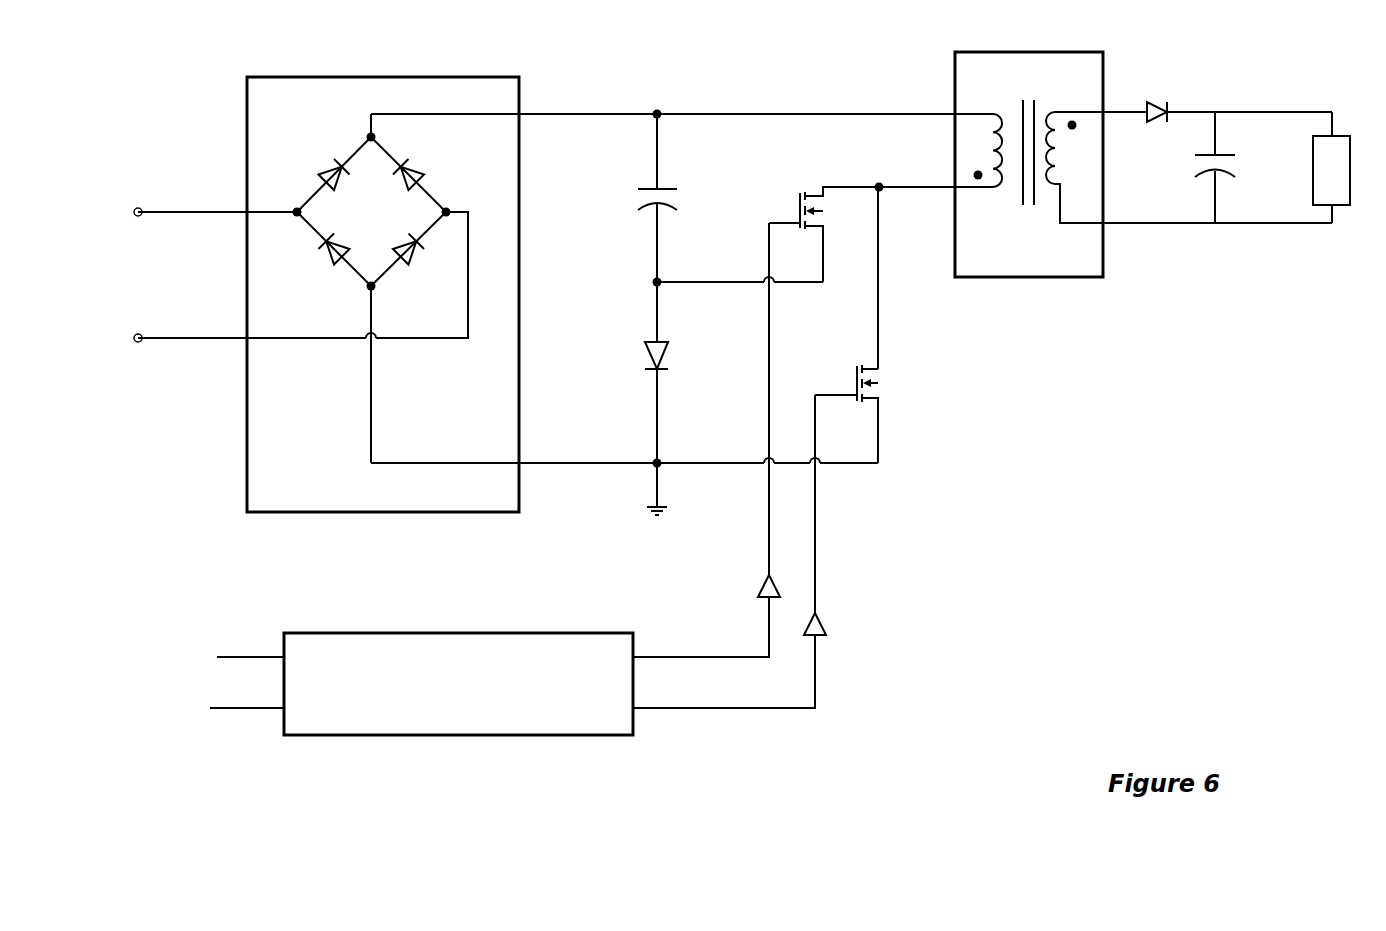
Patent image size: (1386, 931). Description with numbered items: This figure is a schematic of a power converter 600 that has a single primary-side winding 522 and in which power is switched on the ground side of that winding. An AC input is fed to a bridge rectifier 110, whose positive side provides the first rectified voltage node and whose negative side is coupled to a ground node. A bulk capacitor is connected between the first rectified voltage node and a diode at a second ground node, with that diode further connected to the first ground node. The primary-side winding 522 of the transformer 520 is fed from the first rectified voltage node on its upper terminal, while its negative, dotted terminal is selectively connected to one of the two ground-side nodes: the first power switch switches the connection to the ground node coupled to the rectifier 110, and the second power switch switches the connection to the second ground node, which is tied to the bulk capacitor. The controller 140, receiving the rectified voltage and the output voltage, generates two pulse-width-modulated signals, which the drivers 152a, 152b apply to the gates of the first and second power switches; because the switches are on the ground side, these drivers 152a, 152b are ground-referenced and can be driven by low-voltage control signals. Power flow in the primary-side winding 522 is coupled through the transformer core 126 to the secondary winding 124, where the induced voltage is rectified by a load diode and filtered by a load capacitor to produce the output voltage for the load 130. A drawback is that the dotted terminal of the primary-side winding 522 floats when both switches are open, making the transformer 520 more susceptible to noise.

The bridge rectifier 110 is at (326, 280).
The controller 140 is at (421, 672).
The transformer 520 is at (1143, 150).
The primary-side winding 522 is at (986, 136).
The secondary-side winding 124 is at (1189, 154).
The transformer core 126 is at (1033, 169).
The load 130 is at (1343, 158).
The driver 152a is at (753, 652).
The driver 152b is at (706, 609).
The power converter 600 is at (1203, 401).